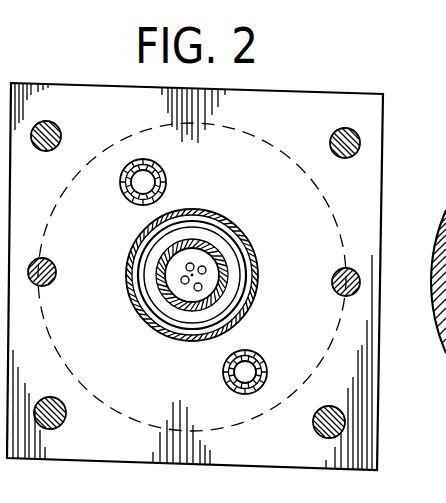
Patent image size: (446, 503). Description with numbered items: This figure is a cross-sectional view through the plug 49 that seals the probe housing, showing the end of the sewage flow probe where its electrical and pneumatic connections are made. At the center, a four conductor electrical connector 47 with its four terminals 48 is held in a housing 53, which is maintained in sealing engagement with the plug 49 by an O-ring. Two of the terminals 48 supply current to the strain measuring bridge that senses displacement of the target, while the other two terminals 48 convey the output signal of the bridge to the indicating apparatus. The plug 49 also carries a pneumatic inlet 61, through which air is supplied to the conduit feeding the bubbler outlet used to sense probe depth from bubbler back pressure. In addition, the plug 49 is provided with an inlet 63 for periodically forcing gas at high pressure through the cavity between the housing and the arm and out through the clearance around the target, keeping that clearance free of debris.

The plug 49 is at (371, 447).
The housing 53 is at (216, 222).
The terminals 48 is at (165, 276).
The electrical connector 47 is at (206, 269).
The pneumatic inlet 61 is at (159, 170).
The inlet 63 is at (257, 362).